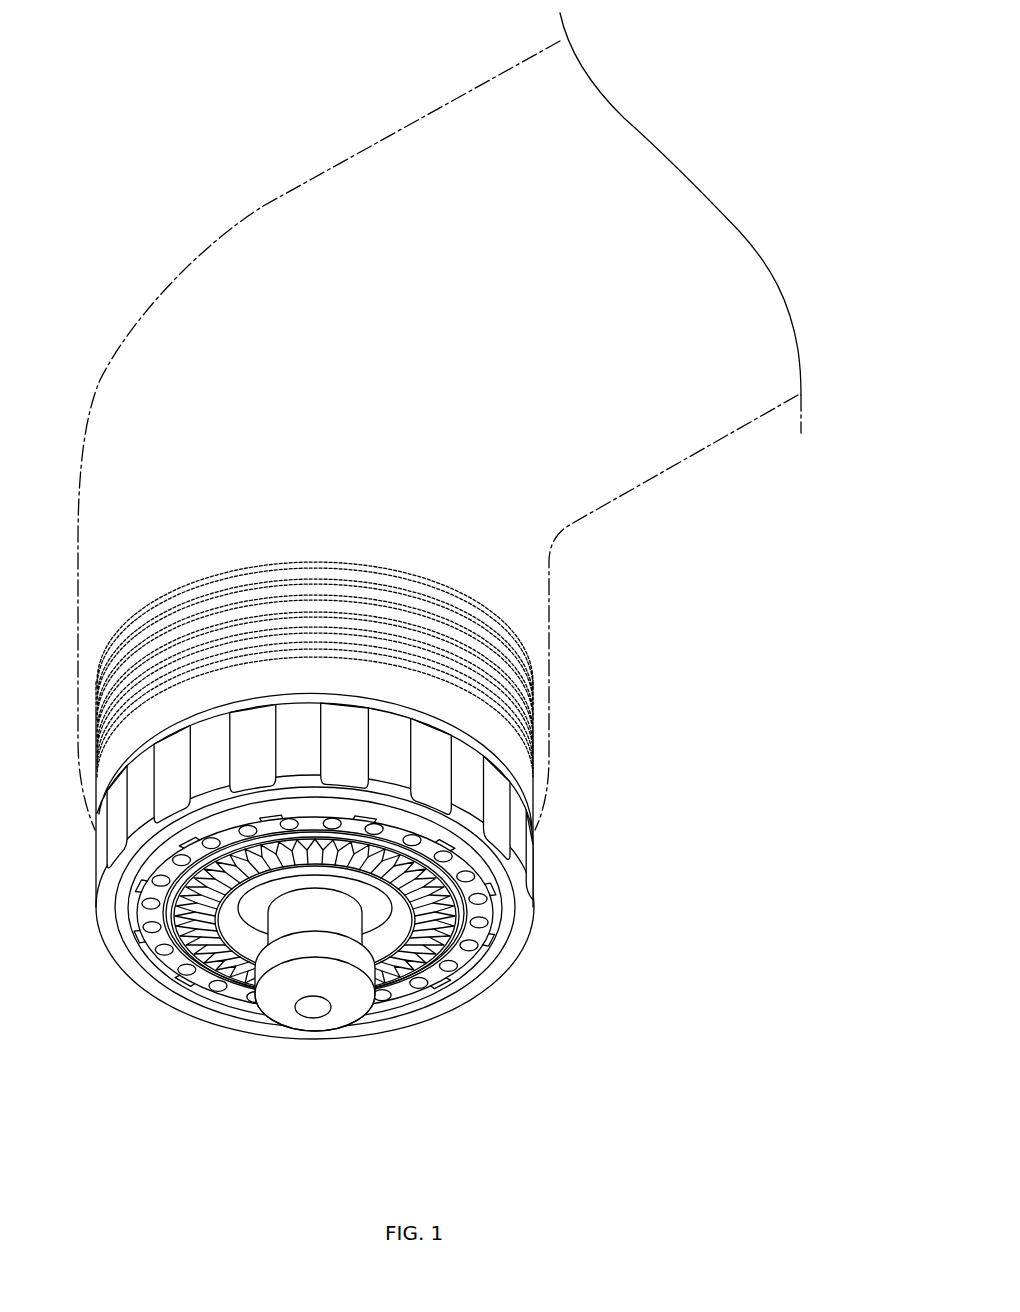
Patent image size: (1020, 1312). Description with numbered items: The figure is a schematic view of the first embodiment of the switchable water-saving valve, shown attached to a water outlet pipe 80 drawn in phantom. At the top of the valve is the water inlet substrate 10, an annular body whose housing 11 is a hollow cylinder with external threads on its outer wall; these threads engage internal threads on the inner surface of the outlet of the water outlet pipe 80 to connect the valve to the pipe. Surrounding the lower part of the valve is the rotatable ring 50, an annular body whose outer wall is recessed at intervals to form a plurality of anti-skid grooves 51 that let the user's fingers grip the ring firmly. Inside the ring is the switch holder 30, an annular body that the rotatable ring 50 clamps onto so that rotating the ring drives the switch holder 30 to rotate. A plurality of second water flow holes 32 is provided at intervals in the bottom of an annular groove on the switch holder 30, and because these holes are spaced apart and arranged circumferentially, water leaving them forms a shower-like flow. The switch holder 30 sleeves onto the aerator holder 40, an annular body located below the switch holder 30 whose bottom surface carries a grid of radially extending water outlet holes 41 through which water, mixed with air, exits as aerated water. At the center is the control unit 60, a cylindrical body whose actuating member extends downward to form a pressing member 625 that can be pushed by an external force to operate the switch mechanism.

The water inlet substrate 10 is at (568, 672).
The housing 11 is at (525, 781).
The switch holder 30 is at (173, 967).
The second water flow holes 32 is at (148, 940).
The aerator holder 40 is at (442, 948).
The water outlet holes 41 is at (425, 957).
The rotatable ring 50 is at (517, 873).
The anti-skid grooves 51 is at (503, 830).
The control unit 60 is at (287, 1015).
The pressing member 625 is at (278, 1012).
The water outlet pipe 80 is at (268, 203).